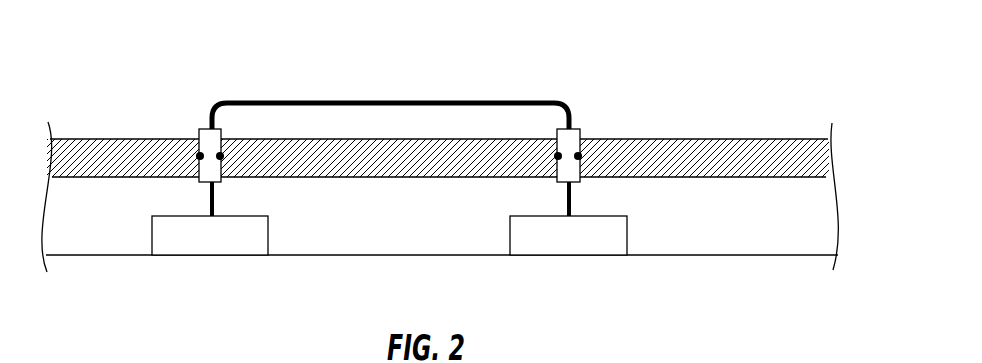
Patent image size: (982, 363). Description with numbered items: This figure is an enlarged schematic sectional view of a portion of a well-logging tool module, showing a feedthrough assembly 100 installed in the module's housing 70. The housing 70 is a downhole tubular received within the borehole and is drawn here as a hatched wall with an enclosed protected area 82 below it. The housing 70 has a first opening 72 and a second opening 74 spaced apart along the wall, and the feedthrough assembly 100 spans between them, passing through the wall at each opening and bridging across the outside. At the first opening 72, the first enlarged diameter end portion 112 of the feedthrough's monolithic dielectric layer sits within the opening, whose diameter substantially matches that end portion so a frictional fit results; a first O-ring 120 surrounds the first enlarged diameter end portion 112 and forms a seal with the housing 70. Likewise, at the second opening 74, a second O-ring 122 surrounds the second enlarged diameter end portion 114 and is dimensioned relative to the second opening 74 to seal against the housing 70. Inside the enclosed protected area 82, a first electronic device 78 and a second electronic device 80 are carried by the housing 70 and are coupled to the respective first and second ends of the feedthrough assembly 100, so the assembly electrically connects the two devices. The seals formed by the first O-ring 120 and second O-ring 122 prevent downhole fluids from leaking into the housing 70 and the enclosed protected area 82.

The feedthrough assembly 100 is at (382, 59).
The housing 70 is at (777, 145).
The first opening 72 is at (198, 136).
The second opening 74 is at (582, 135).
The first electronic device 78 is at (152, 236).
The second electronic device 80 is at (627, 233).
The enclosed protected area 82 is at (418, 244).
The first enlarged diameter end portion 112 is at (208, 142).
The second enlarged diameter end portion 114 is at (573, 136).
The first O-ring 120 is at (197, 155).
The second O-ring 122 is at (555, 156).